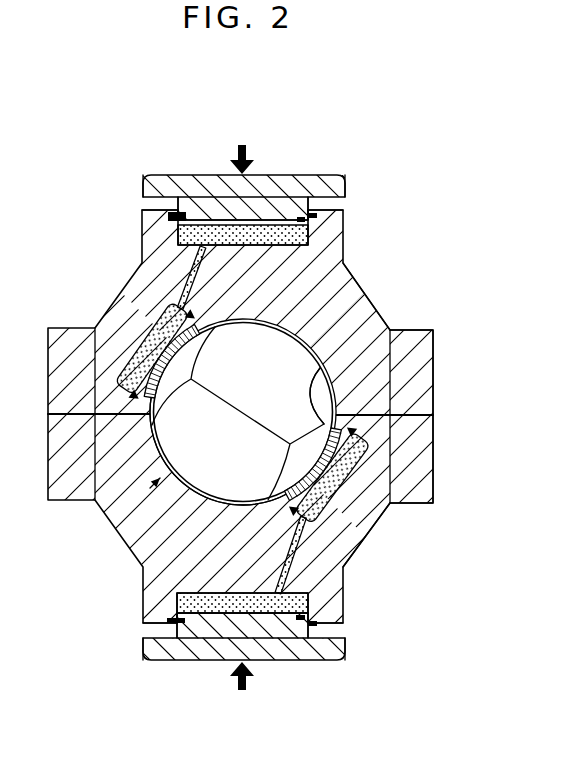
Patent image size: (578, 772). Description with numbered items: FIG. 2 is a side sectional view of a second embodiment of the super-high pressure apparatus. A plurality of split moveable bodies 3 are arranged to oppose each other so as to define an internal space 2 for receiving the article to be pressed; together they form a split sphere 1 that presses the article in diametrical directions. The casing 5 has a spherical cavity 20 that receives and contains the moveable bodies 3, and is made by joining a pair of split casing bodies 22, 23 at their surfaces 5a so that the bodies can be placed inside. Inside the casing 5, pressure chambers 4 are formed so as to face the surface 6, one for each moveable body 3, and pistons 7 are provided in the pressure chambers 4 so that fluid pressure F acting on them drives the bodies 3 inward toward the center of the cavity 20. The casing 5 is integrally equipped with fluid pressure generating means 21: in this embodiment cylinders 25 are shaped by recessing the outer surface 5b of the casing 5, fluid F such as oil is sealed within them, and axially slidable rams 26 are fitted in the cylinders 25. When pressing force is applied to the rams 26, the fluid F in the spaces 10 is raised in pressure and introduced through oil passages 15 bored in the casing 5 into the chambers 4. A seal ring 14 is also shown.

The split sphere 1 is at (118, 527).
The internal space 2 is at (236, 401).
The moveable bodies 3 is at (314, 352).
The pressure chambers 4 is at (178, 322).
The casing 5 is at (452, 464).
The joining surfaces 5a is at (424, 404).
The outer surface 5b is at (150, 210).
The surface 6 is at (208, 330).
The pistons 7 is at (150, 377).
The fluid pressure forming spaces 10 is at (300, 238).
The seal ring 14 is at (188, 210).
The oil passages 15 is at (180, 290).
The spherical cavity 20 is at (334, 380).
The fluid pressure generating means 21 is at (357, 170).
The split casing body 22 is at (361, 289).
The split casing body 23 is at (375, 524).
The cylinders 25 is at (170, 226).
The rams 26 is at (296, 220).
The fluid pressure F is at (148, 328).